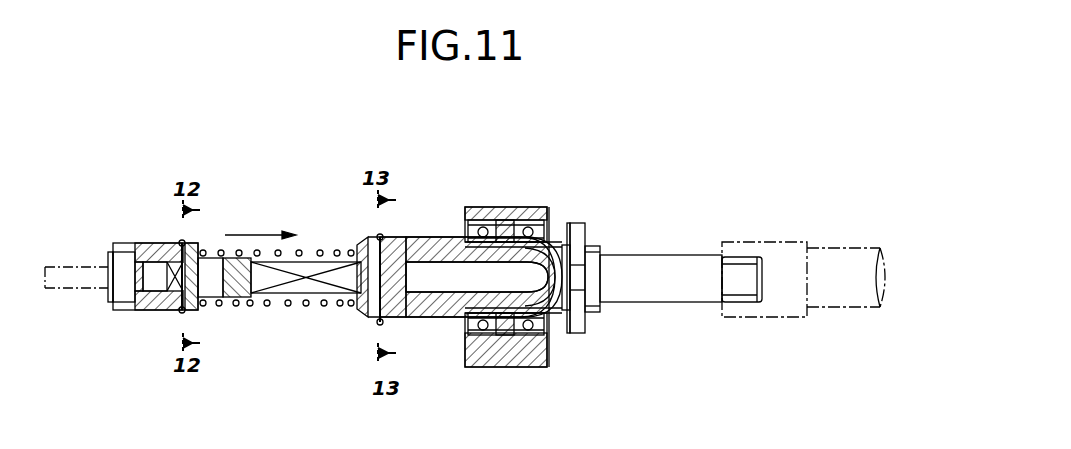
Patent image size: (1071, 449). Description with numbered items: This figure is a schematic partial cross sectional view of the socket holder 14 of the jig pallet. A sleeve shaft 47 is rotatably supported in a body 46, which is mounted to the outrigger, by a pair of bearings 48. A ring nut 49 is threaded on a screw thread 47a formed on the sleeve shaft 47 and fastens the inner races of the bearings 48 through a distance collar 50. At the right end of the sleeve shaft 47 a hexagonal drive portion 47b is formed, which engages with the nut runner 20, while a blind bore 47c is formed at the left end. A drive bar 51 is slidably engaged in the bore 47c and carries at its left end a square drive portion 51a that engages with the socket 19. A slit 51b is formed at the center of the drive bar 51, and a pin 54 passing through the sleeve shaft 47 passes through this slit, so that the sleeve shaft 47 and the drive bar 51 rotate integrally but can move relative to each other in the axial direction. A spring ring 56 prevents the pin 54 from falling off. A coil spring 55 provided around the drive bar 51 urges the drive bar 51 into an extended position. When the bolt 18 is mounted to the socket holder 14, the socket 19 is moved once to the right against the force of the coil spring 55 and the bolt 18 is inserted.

The socket holder 14 is at (330, 170).
The bolt 18 is at (58, 290).
The socket 19 is at (150, 243).
The nut runner 20 is at (830, 308).
The body 46 is at (511, 368).
The sleeve shaft 47 is at (671, 246).
The screw thread 47a is at (596, 246).
The hexagonal drive portion 47b is at (745, 257).
The blind bore 47c is at (436, 276).
The bearings 48 is at (527, 220).
The ring nut 49 is at (579, 335).
The distance collar 50 is at (545, 336).
The drive bar 51 is at (302, 255).
The square drive portion 51a is at (162, 310).
The slit 51b is at (283, 283).
The pin 54 is at (362, 312).
The coil spring 55 is at (262, 312).
The spring ring 56 is at (384, 326).